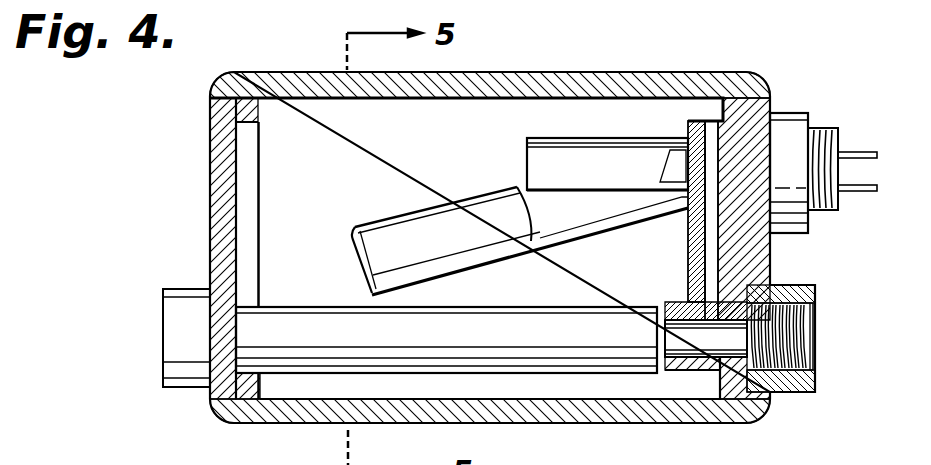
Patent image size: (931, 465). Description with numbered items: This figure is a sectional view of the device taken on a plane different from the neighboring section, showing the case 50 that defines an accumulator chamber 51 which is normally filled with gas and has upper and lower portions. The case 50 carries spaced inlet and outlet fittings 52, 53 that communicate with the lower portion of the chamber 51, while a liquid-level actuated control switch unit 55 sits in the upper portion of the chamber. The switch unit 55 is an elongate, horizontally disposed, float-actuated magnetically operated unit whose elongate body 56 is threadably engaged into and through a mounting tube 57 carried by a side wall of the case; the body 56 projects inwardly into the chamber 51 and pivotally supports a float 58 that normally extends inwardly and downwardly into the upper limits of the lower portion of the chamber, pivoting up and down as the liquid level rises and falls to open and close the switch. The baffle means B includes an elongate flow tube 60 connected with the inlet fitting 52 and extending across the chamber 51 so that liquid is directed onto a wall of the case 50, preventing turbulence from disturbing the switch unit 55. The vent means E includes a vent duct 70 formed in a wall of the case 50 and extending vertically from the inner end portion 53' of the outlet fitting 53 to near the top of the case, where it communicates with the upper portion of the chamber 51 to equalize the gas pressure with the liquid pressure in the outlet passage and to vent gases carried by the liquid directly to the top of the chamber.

The case 50 is at (211, 178).
The accumulator chamber 51 is at (297, 192).
The inlet fitting 52 is at (165, 289).
The outlet fitting 53 is at (794, 318).
The inner end portion of the outlet fitting 53' is at (690, 415).
The control switch unit 55 is at (533, 137).
The elongate body 56 is at (587, 138).
The mounting tube 57 is at (793, 120).
The float 58 is at (384, 255).
The flow tube 60 is at (621, 306).
The vent duct 70 is at (708, 248).
The baffle means B is at (528, 303).
The vent means E is at (702, 119).